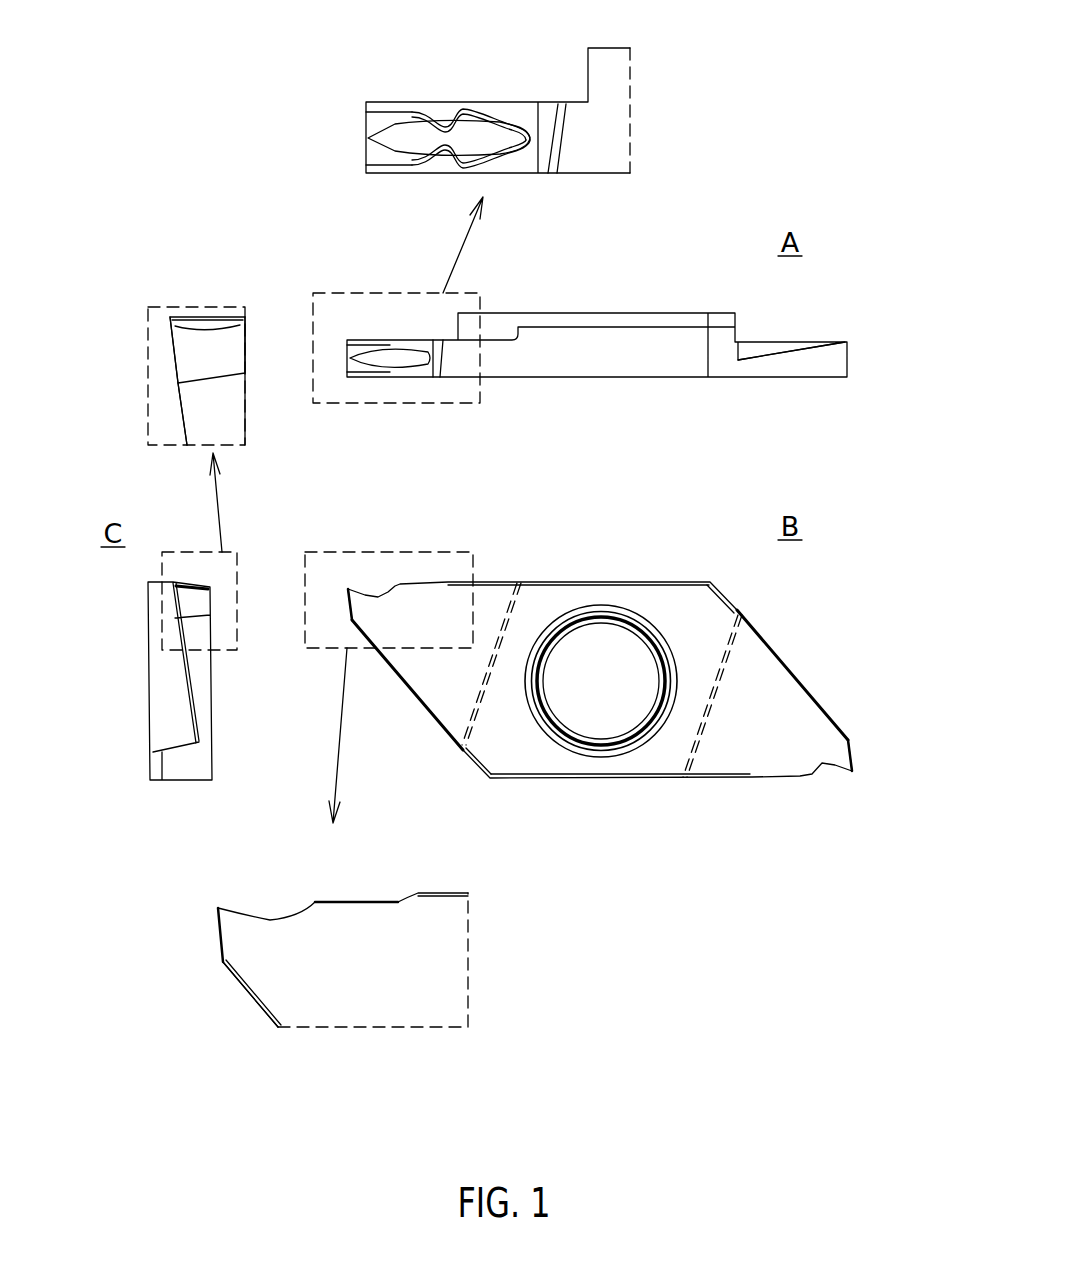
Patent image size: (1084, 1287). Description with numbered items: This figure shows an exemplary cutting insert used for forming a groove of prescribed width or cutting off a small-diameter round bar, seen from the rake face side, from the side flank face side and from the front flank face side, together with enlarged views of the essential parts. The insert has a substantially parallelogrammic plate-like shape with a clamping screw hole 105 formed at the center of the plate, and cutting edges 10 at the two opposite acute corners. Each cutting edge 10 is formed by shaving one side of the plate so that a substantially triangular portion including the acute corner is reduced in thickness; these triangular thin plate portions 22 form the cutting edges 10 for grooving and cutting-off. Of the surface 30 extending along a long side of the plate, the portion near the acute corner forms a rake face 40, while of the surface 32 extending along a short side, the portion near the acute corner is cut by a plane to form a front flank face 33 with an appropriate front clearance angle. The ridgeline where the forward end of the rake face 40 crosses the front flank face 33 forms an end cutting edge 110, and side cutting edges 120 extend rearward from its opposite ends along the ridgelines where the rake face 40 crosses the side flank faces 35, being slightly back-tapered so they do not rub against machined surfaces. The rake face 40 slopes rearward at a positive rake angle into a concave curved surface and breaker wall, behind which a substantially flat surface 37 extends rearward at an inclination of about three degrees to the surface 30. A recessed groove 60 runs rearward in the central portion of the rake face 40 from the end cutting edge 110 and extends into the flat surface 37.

The cutting edge 10 is at (343, 327).
The triangular thin plate portion 22 is at (485, 103).
The surface extending along the long side 30 is at (552, 358).
The surface extending along the short side 32 is at (420, 700).
The front flank face 33 is at (225, 358).
The side flank face 35 is at (175, 365).
The flat surface 37 is at (365, 902).
The rake face 40 is at (205, 320).
The recessed groove 60 is at (412, 142).
The clamping screw hole 105 is at (545, 663).
The end cutting edge 110 is at (365, 118).
The side cutting edge 120 is at (395, 103).